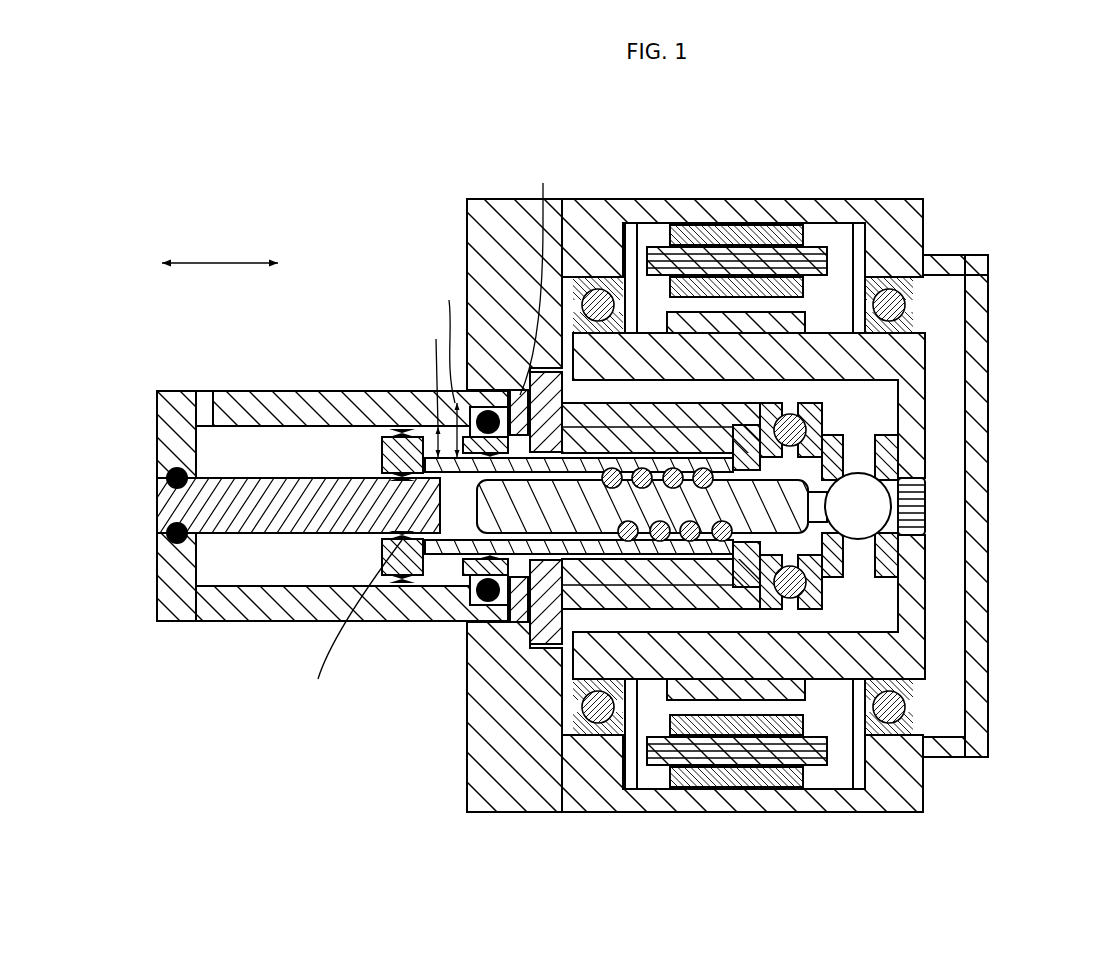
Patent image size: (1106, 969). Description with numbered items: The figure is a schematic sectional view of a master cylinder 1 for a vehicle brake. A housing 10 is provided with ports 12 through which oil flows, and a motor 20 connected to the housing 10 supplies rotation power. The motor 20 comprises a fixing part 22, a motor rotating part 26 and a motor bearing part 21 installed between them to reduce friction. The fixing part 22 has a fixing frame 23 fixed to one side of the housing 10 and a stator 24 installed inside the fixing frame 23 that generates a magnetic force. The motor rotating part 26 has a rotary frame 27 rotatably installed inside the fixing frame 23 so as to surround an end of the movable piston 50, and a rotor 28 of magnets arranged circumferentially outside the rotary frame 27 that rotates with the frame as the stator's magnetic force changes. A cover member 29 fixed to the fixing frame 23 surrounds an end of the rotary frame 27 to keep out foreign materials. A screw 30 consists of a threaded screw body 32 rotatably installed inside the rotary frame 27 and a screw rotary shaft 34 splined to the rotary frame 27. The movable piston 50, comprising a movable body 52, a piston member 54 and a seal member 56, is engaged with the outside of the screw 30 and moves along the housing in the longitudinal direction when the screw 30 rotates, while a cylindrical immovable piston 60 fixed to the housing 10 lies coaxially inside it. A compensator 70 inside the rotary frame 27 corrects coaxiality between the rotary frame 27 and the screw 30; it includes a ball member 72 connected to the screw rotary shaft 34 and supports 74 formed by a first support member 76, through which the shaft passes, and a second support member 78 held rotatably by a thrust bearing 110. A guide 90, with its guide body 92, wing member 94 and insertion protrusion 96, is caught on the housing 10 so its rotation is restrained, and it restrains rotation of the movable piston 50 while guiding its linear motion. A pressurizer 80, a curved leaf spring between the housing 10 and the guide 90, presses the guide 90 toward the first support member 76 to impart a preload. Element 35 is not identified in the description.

The master cylinder 1 is at (830, 160).
The housing 10 is at (553, 484).
The ports 12 is at (213, 410).
The motor 20 is at (752, 195).
The motor bearing part 21 is at (925, 262).
The fixing part 22 is at (737, 453).
The fixing frame 23 is at (652, 256).
The stator 24 is at (668, 232).
The motor rotating part 26 is at (749, 565).
The rotary frame 27 is at (695, 652).
The rotor 28 is at (744, 692).
The cover member 29 is at (988, 463).
The screw 30 is at (462, 523).
The screw body 32 is at (520, 536).
The screw rotary shaft 34 is at (868, 488).
The thrust plate 35 is at (916, 508).
The movable piston 50 is at (372, 462).
The movable body 52 is at (579, 438).
The piston member 54 is at (398, 435).
The seal member 56 is at (410, 428).
The immovable piston 60 is at (262, 505).
The compensator 70 is at (838, 590).
The ball member 72 is at (836, 562).
The supports 74 is at (926, 445).
The first support member 76 is at (778, 440).
The second support member 78 is at (814, 418).
The pressurizer 80 is at (470, 440).
The guide 90 is at (814, 378).
The guide body 92 is at (745, 385).
The wing member 94 is at (882, 372).
The insertion protrusion 96 is at (538, 368).
The thrust bearing 110 is at (1008, 473).